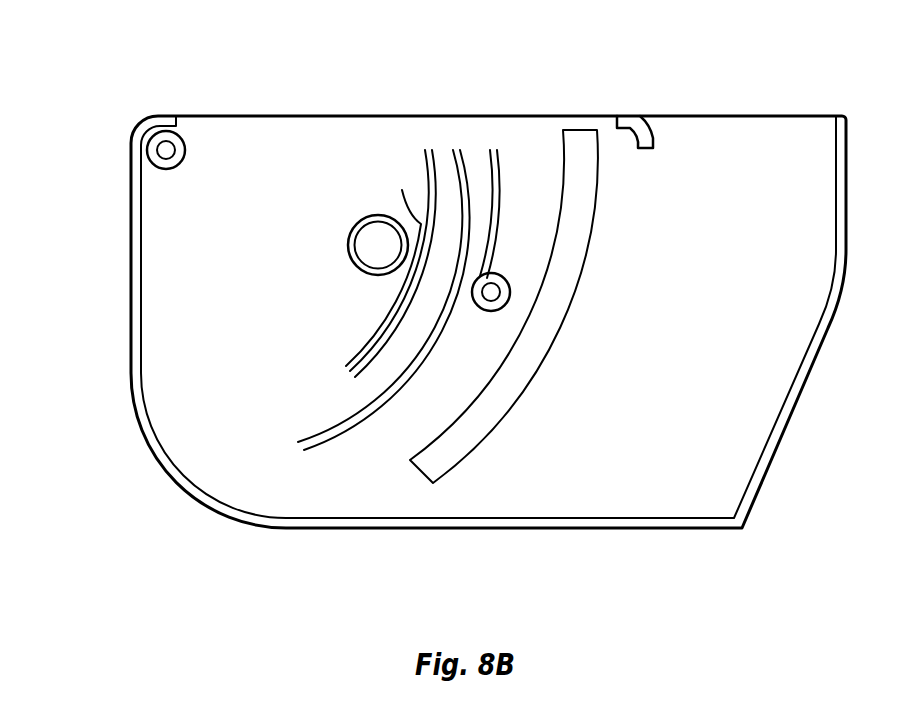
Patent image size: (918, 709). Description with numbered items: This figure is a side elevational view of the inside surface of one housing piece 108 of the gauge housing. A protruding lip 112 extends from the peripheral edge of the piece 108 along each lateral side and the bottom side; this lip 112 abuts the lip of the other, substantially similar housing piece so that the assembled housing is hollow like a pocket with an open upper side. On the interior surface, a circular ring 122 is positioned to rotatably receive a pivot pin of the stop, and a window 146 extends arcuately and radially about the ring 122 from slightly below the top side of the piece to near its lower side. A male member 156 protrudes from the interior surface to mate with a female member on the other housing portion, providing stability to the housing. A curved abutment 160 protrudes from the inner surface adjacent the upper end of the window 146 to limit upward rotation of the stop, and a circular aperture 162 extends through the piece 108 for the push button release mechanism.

The housing piece 108 is at (690, 333).
The protruding lip 112 is at (131, 292).
The circular ring 122 is at (185, 142).
The window 146 is at (582, 160).
The male member 156 is at (491, 273).
The curved abutment 160 is at (649, 126).
The circular aperture 162 is at (378, 215).